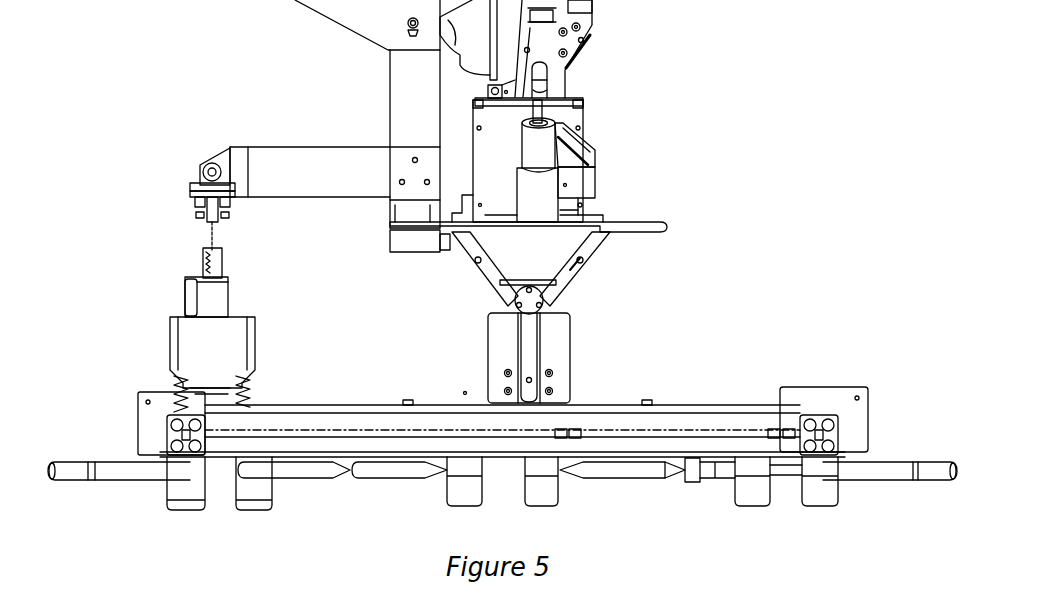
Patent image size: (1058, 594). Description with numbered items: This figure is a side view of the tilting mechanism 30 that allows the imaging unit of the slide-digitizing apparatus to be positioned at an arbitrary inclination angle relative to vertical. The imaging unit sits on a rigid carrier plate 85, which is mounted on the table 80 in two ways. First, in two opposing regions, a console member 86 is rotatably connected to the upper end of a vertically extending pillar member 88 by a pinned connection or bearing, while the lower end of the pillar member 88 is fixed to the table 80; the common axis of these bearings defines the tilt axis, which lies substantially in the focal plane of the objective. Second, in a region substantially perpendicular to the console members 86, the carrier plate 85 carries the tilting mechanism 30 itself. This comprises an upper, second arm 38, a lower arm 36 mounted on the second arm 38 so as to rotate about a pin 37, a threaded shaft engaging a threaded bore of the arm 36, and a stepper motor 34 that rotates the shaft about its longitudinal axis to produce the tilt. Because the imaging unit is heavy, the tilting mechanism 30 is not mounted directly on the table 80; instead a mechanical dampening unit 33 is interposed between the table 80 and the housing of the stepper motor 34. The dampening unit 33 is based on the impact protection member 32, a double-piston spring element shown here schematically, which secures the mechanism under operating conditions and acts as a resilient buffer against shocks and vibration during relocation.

The tilting mechanism 30 is at (115, 145).
The impact protection member 32 is at (163, 378).
The mechanical dampening unit 33 is at (193, 348).
The stepper motor 34 is at (185, 295).
The arm 36 is at (203, 217).
The pin 37 is at (207, 167).
The second arm 38 is at (270, 148).
The table 80 is at (740, 410).
The carrier plate 85 is at (637, 223).
The console member 86 is at (610, 250).
The pillar member 88 is at (572, 362).